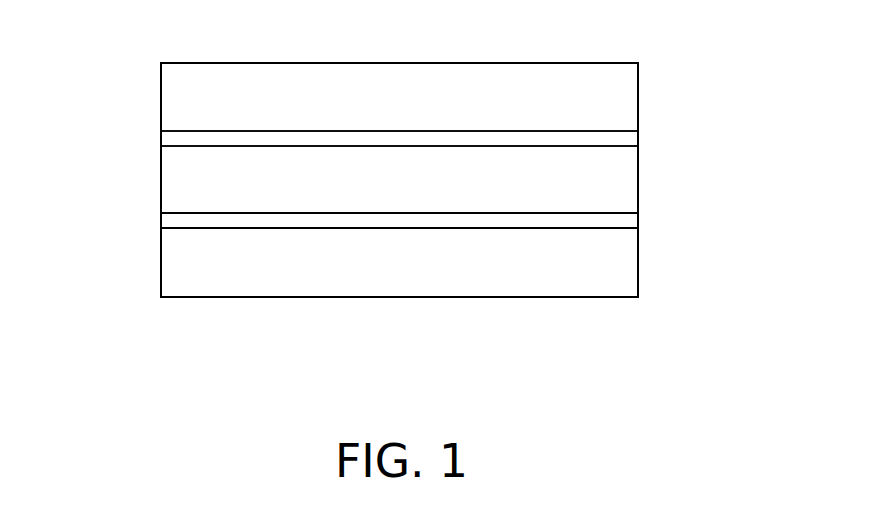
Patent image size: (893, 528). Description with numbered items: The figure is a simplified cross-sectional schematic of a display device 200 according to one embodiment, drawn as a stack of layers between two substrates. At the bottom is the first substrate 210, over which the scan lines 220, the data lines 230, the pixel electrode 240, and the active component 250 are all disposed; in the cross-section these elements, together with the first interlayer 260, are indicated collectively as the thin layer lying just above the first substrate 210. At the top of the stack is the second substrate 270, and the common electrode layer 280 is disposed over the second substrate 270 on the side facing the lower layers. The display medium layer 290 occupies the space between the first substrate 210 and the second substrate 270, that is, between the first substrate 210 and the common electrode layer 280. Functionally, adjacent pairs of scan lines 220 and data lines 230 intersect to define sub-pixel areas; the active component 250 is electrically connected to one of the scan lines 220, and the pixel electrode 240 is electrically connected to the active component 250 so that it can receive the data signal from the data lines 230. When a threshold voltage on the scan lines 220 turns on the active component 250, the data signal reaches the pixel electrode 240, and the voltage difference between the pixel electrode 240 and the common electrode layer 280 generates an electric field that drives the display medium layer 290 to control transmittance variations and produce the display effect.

The display device 200 is at (690, 385).
The first substrate 210 is at (192, 270).
The scan lines 220 is at (663, 298).
The data lines 230 is at (444, 200).
The pixel electrode 240 is at (444, 222).
The active component 250 is at (444, 243).
The first interlayer 260 is at (439, 259).
The second substrate 270 is at (192, 93).
The common electrode layer 280 is at (198, 140).
The display medium layer 290 is at (192, 180).